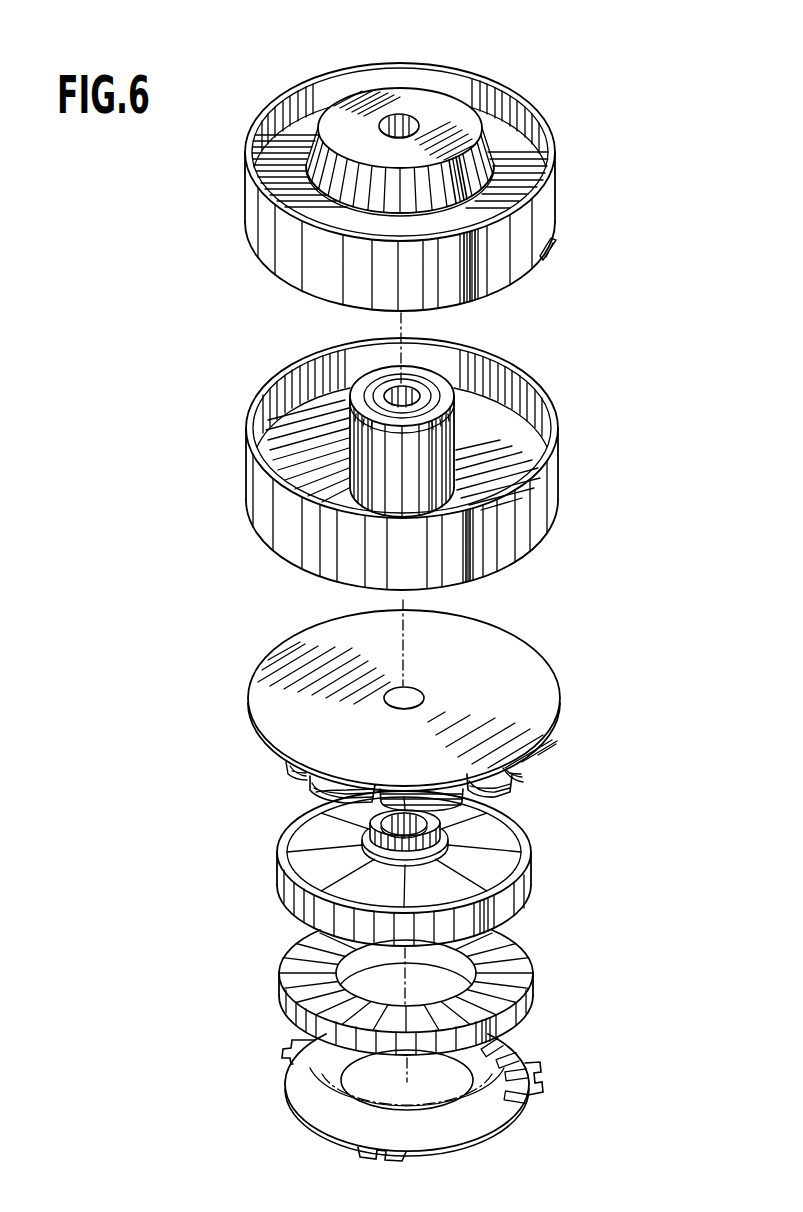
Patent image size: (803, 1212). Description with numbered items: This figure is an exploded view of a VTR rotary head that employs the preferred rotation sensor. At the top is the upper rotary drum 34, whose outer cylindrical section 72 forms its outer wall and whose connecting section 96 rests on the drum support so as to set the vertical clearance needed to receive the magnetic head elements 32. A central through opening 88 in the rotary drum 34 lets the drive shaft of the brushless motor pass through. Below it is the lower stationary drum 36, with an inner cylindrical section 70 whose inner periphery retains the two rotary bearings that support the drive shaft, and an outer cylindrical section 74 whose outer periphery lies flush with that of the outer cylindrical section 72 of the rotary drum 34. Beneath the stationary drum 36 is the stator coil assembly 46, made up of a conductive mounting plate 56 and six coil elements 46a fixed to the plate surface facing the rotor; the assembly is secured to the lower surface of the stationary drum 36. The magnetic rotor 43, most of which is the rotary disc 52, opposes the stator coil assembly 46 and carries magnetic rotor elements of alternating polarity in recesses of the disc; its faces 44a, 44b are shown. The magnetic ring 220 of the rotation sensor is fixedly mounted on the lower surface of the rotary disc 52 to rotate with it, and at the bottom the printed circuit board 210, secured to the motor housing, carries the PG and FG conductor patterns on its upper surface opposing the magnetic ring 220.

The upper rotary drum 34 is at (407, 165).
The central through opening 88 is at (401, 121).
The connecting section 96 is at (278, 175).
The outer cylindrical section 72 is at (258, 225).
The magnetic head element 32 is at (552, 250).
The lower stationary drum 36 is at (406, 464).
The inner cylindrical section 70 is at (362, 447).
The outer cylindrical section 74 is at (256, 475).
The stator coil assembly 46 is at (394, 697).
The conductive mounting plate 56 is at (264, 681).
The coil elements 46a is at (312, 788).
The magnetic rotor 43 is at (405, 868).
The upper face of wheel 44a is at (313, 820).
The rotary disc 52 is at (282, 862).
The spokes 44b is at (313, 867).
The magnetic ring 220 is at (535, 948).
The printed circuit board 210 is at (528, 1050).